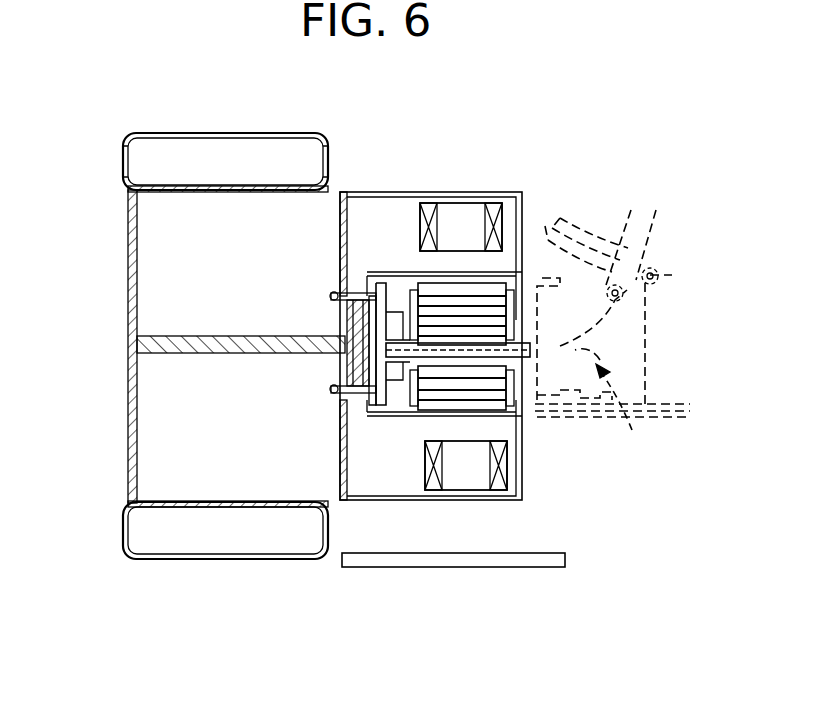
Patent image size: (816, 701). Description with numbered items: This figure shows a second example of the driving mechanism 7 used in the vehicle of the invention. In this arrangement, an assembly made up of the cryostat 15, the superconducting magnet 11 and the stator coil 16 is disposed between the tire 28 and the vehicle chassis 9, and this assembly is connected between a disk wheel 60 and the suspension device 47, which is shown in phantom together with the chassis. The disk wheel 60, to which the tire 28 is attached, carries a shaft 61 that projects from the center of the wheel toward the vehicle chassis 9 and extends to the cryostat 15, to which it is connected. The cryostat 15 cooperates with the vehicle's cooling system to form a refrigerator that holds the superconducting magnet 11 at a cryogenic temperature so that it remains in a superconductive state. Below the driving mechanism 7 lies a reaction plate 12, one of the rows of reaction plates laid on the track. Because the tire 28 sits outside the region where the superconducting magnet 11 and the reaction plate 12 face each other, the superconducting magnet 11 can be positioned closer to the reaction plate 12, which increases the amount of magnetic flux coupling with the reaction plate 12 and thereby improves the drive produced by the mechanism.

The driving mechanism 7 is at (384, 150).
The vehicle chassis 9 is at (686, 349).
The superconducting magnet 11 is at (500, 222).
The reaction plate 12 is at (448, 571).
The cryostat 15 is at (468, 192).
The stator coil 16 is at (527, 403).
The tire 28 is at (251, 133).
The suspension device 47 is at (632, 430).
The disk wheel 60 is at (130, 288).
The shaft 61 is at (252, 345).